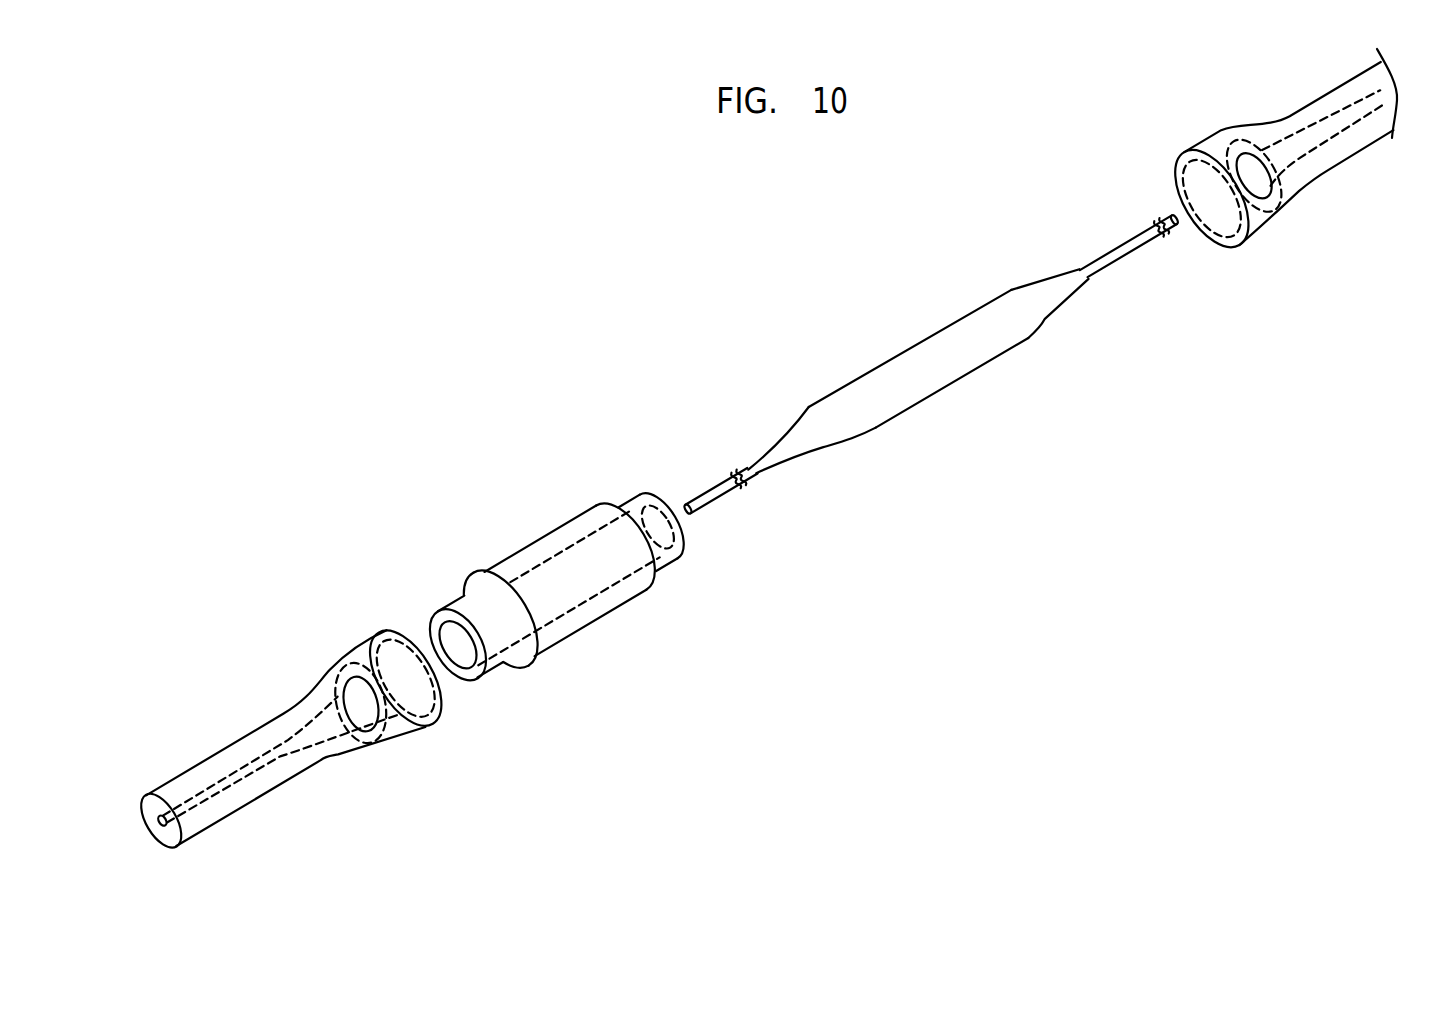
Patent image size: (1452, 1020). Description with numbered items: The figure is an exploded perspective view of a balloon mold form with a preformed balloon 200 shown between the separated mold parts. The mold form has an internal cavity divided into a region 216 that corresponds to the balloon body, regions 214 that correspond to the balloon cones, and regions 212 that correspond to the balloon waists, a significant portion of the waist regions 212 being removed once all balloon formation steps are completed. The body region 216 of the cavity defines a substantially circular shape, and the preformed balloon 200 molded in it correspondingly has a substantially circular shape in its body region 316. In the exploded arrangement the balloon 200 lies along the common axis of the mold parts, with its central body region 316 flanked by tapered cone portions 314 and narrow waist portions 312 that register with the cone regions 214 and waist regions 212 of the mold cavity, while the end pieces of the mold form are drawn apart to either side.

The preformed balloon 200 is at (931, 372).
The region corresponding to balloon waist 212 is at (307, 745).
The region corresponding to balloon cone 214 is at (328, 678).
The region corresponding to balloon body 216 is at (591, 597).
The shaft 312 is at (762, 472).
The tapered end portion 314 is at (803, 460).
The body region 316 is at (933, 412).